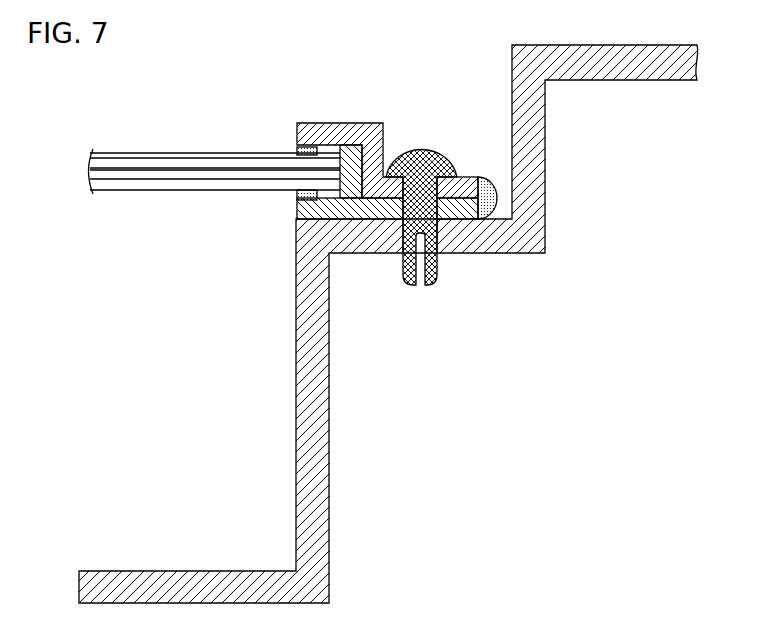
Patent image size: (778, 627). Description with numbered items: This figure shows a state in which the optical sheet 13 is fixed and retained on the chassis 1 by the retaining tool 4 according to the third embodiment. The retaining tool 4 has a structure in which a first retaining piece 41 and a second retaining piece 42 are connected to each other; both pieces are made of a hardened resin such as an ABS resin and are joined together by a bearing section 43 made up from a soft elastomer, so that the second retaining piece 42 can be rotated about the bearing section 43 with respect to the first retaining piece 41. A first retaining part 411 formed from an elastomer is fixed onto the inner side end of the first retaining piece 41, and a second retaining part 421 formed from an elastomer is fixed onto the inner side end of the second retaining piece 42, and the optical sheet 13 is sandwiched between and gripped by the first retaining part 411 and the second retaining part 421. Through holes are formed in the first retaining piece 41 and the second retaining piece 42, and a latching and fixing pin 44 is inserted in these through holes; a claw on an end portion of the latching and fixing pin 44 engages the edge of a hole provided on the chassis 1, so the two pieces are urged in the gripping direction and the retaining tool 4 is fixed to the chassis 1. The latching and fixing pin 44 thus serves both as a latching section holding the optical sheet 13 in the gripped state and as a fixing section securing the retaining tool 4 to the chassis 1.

The chassis 1 is at (325, 408).
The retaining tool 4 is at (330, 90).
The optical sheet 13 is at (142, 162).
The first retaining piece 41 is at (297, 213).
The first retaining part 411 is at (297, 193).
The second retaining piece 42 is at (375, 122).
The second retaining part 421 is at (297, 150).
The bearing section 43 is at (487, 183).
The latching and fixing pin 44 is at (433, 285).